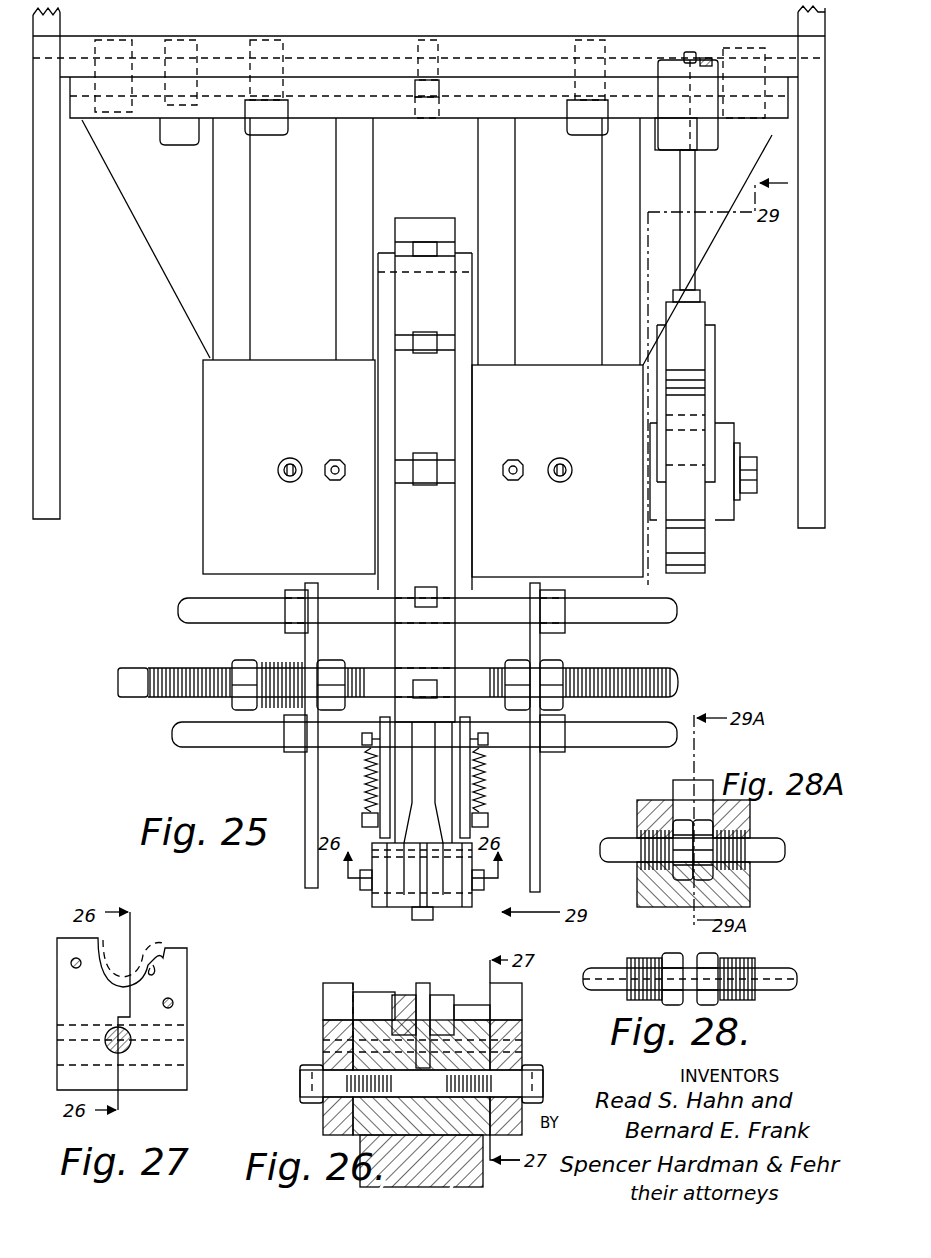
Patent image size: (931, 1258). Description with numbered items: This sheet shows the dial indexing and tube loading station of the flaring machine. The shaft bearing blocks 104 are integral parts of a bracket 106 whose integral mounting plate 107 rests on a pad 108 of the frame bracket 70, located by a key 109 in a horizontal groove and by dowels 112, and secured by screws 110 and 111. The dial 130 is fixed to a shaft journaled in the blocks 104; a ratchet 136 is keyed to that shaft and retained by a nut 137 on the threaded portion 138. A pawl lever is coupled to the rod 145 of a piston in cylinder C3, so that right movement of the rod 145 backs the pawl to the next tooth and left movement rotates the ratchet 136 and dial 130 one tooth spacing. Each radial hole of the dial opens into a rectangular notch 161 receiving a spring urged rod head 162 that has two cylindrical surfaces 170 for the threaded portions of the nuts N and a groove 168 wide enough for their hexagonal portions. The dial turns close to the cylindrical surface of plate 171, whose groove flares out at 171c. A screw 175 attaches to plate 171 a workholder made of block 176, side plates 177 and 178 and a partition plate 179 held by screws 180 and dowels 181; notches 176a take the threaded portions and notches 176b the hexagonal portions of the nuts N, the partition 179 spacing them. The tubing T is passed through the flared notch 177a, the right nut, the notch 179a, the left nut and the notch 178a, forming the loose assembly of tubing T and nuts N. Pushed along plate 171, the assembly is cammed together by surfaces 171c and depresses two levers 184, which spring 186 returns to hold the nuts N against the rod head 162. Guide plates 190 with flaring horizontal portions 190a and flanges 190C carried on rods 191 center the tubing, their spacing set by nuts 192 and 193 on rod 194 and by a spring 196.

In FIG. 25, the bracket 70 is at (808, 522).
In FIG. 25, the shaft bearing blocks 104 is at (215, 398).
In FIG. 25, the bracket 106 is at (485, 172).
In FIG. 25, the mounting plate 107 is at (318, 110).
In FIG. 25, the pad 108 is at (370, 52).
In FIG. 25, the key 109 is at (532, 72).
In FIG. 25, the screws 110 is at (268, 133).
In FIG. 25, the screws 111 is at (178, 138).
In FIG. 25, the dowels 112 is at (117, 105).
In FIG. 25, the cylinder C3 is at (688, 72).
In FIG. 25, the dial 130 is at (457, 530).
In FIG. 25, the ratchet 136 is at (698, 552).
In FIG. 25, the nut 137 is at (745, 492).
In FIG. 25, the threaded portion 138 is at (756, 463).
In FIG. 25, the rod 145 is at (690, 249).
In FIG. 25, the notch 161 is at (426, 262).
In FIG. 25, the head 162 is at (428, 248).
In FIG. 28A, the head 162 is at (645, 822).
In FIG. 28A, the groove 168 is at (708, 798).
In FIG. 25, the cylindrical surfaces 170 is at (437, 354).
In FIG. 28A, the cylindrical surfaces 170 is at (660, 803).
In FIG. 25, the plate 171 is at (400, 795).
In FIG. 28A, the plate 171 is at (752, 893).
In FIG. 26, the plate 171 is at (478, 1175).
In FIG. 25, the flared portion 171c is at (408, 828).
In FIG. 25, the screw 175 is at (432, 920).
In FIG. 25, the block 176 is at (396, 912).
In FIG. 27, the block 176 is at (183, 1082).
In FIG. 26, the block 176 is at (478, 1065).
In FIG. 27, the notches 176a is at (150, 968).
In FIG. 26, the notches 176a is at (366, 1000).
In FIG. 25, the notches 176b is at (398, 878).
In FIG. 27, the notches 176b is at (150, 948).
In FIG. 26, the notches 176b is at (403, 1010).
In FIG. 25, the side plate 177 is at (475, 908).
In FIG. 26, the side plate 177 is at (515, 1006).
In FIG. 26, the flared notch 177a is at (508, 1000).
In FIG. 25, the side plate 178 is at (378, 903).
In FIG. 26, the side plate 178 is at (326, 1020).
In FIG. 26, the notch 178a is at (334, 1010).
In FIG. 26, the partition plate 179 is at (430, 992).
In FIG. 26, the notch 179a is at (440, 1010).
In FIG. 25, the screws 180 is at (484, 888).
In FIG. 27, the screws 180 is at (112, 1030).
In FIG. 26, the screws 180 is at (300, 1085).
In FIG. 27, the dowels 181 is at (71, 966).
In FIG. 26, the dowels 181 is at (322, 1027).
In FIG. 25, the levers 184 is at (385, 720).
In FIG. 25, the spring 186 is at (368, 770).
In FIG. 25, the plates 190 is at (305, 592).
In FIG. 25, the flanges 190C is at (565, 603).
In FIG. 25, the horizontal portions 190a is at (305, 865).
In FIG. 25, the rods 191 is at (668, 615).
In FIG. 28A, the rods 191 is at (693, 765).
In FIG. 25, the nut 192 is at (560, 676).
In FIG. 25, the nut 193 is at (512, 668).
In FIG. 25, the rod 194 is at (216, 672).
In FIG. 25, the spring 196 is at (280, 668).
In FIG. 28A, the tubing T is at (772, 842).
In FIG. 28, the tubing T is at (780, 972).
In FIG. 28A, the nuts N is at (668, 883).
In FIG. 28, the nuts N is at (676, 956).